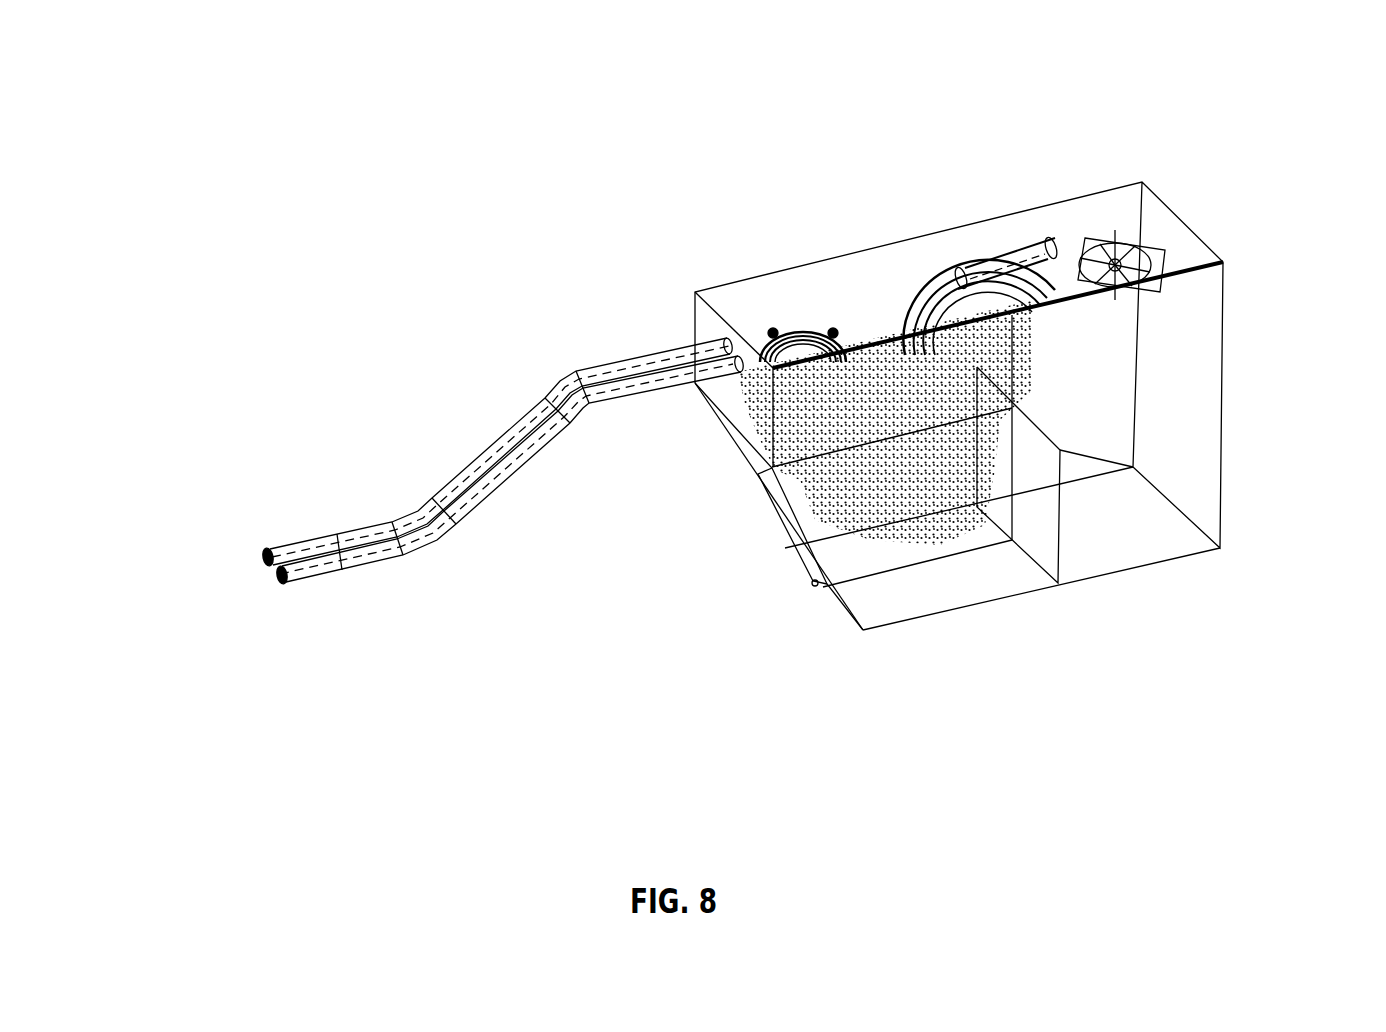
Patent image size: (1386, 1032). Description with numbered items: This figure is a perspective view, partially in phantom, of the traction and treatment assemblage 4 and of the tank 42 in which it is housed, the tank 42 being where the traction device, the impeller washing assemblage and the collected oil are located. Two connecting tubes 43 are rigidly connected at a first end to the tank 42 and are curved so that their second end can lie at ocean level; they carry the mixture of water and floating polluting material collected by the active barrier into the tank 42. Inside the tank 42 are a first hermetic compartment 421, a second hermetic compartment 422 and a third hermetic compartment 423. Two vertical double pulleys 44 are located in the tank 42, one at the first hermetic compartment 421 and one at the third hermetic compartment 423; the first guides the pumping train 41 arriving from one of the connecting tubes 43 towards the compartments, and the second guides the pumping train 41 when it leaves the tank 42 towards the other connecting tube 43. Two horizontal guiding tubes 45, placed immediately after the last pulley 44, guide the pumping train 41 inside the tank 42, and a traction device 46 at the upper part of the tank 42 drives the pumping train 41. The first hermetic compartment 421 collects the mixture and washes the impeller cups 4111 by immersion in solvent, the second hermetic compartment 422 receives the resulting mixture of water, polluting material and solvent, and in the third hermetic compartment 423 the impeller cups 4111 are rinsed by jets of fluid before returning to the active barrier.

The traction and treatment assemblage 4 is at (660, 150).
The pumping train 41 is at (255, 588).
The tank 42 is at (1223, 342).
The connecting tubes 43 is at (519, 400).
The vertical double pulleys 44 is at (957, 231).
The horizontal guiding tubes 45 is at (995, 280).
The traction device 46 is at (1106, 203).
The impeller cups 4111 is at (779, 327).
The first hermetic compartment 421 is at (1150, 499).
The second hermetic compartment 422 is at (1192, 542).
The third hermetic compartment 423 is at (1120, 549).